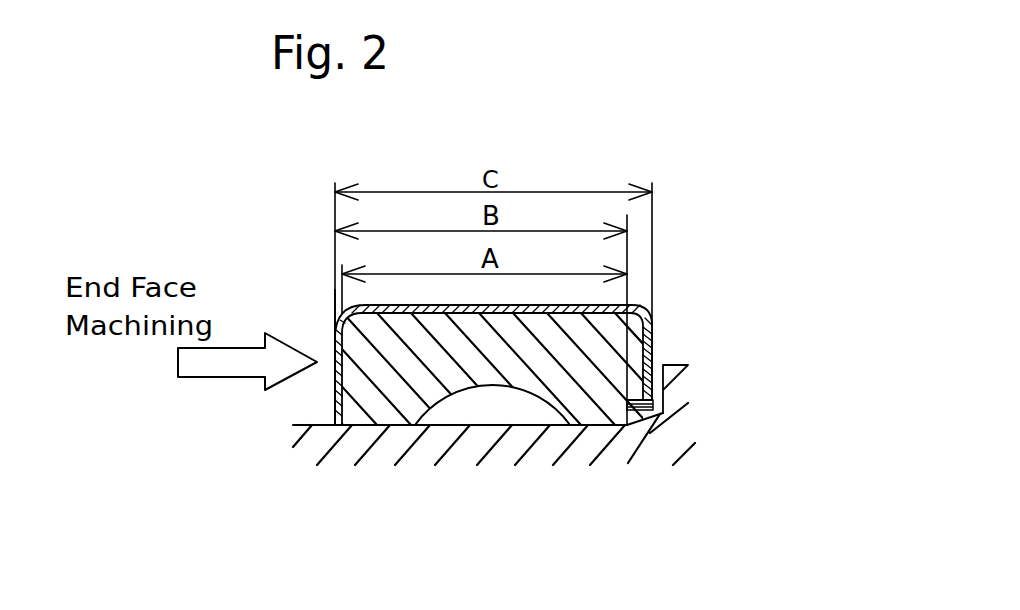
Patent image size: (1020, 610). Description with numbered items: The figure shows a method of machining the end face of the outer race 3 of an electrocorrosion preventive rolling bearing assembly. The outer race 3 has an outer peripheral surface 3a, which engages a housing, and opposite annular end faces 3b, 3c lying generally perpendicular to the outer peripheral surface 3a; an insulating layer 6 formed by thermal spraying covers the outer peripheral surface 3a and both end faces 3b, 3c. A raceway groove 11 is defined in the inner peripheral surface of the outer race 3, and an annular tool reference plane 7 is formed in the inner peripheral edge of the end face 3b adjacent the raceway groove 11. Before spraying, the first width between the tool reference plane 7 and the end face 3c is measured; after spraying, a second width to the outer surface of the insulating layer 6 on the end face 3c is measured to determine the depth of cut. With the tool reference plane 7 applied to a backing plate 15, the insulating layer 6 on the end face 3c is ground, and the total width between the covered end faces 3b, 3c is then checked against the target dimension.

The outer race 3 is at (640, 315).
The outer peripheral surface 3a is at (590, 305).
The end face 3b is at (653, 337).
The end face 3c is at (337, 337).
The insulating layer 6 is at (336, 290).
The annular tool reference plane 7 is at (653, 410).
The raceway groove 11 is at (517, 387).
The backing plate 15 is at (680, 386).